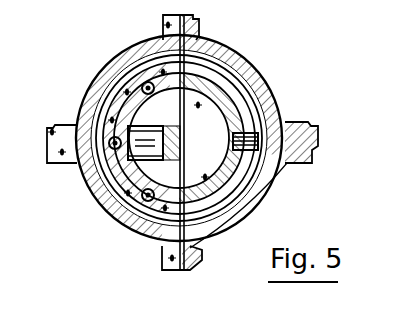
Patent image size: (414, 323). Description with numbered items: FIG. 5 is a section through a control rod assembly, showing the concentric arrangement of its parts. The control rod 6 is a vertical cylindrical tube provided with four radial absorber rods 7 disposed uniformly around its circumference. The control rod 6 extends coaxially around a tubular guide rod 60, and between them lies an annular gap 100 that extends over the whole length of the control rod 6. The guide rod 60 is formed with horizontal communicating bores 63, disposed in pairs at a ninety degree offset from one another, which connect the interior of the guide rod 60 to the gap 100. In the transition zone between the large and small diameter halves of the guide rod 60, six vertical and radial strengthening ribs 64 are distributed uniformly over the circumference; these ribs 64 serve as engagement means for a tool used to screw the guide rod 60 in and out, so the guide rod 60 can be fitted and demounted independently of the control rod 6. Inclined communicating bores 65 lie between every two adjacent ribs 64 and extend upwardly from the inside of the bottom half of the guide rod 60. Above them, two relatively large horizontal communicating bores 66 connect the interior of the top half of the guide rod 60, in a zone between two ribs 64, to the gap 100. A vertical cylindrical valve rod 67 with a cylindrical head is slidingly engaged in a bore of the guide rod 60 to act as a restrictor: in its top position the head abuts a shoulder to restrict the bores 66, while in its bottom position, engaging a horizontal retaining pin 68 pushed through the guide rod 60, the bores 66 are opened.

The control rod 6 is at (145, 55).
The absorber rod 7 is at (166, 22).
The guide rod 60 is at (136, 232).
The communicating bore 63 is at (286, 124).
The strengthening rib 64 is at (135, 110).
The inclined communicating bore 65 is at (140, 85).
The communicating bore 66 is at (115, 165).
The valve rod 67 is at (172, 146).
The retaining pin 68 is at (225, 88).
The annular gap 100 is at (205, 56).